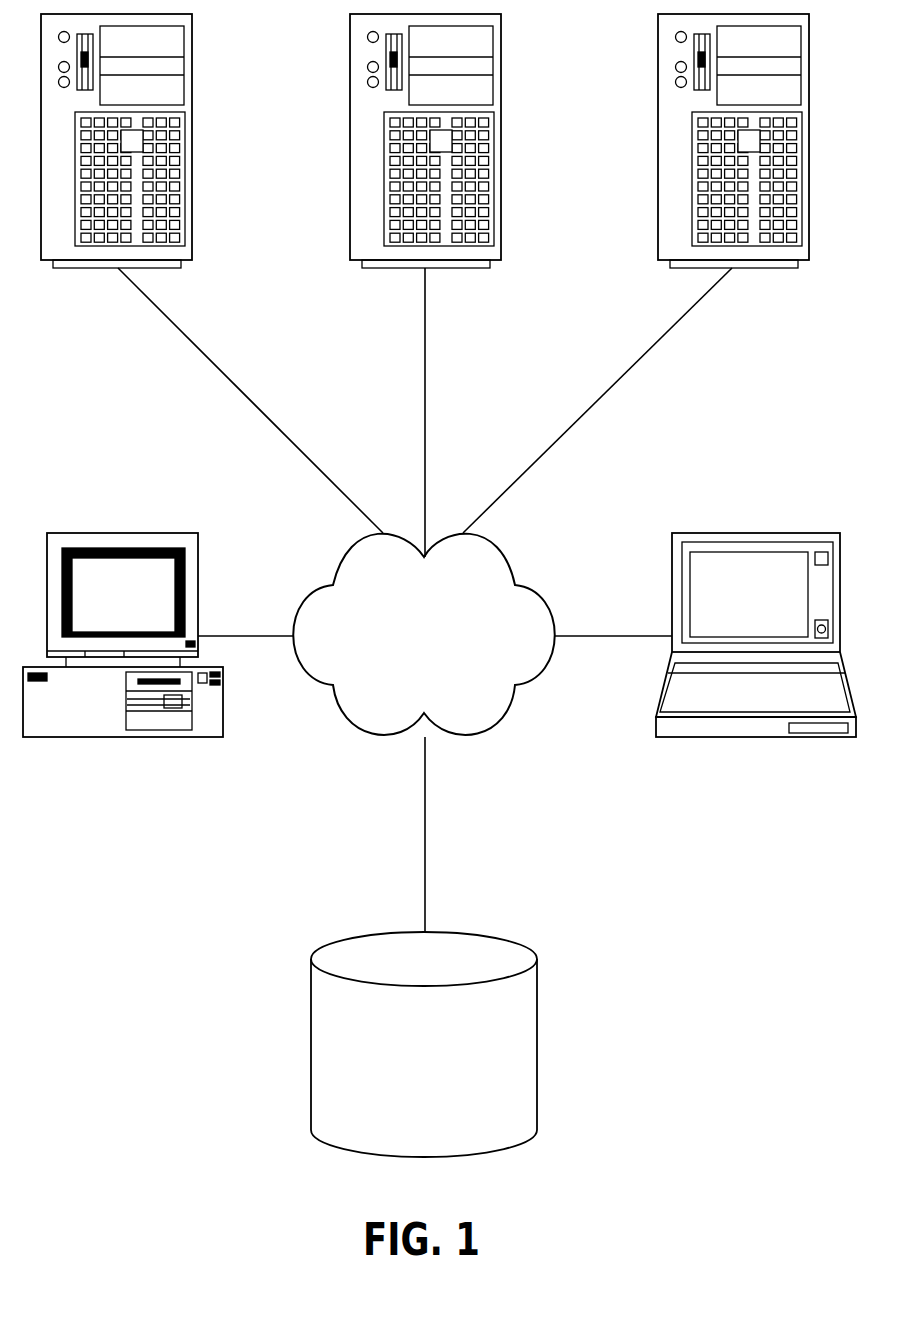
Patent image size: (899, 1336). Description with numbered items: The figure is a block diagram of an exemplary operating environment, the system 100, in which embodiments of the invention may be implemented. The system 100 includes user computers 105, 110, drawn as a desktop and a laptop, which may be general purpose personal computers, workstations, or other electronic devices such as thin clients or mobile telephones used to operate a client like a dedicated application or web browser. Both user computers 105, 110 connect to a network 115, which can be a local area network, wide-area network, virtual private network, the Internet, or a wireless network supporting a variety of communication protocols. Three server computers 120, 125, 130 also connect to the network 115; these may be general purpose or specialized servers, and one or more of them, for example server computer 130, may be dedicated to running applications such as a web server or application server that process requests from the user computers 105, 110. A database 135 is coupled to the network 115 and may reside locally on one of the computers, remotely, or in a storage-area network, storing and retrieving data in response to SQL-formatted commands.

The system 100 is at (222, 881).
The user computer 105 is at (205, 737).
The user computer 110 is at (803, 737).
The network 115 is at (502, 713).
The server computer 120 is at (170, 268).
The server computer 125 is at (477, 268).
The server computer 130 is at (785, 268).
The database 135 is at (500, 1152).